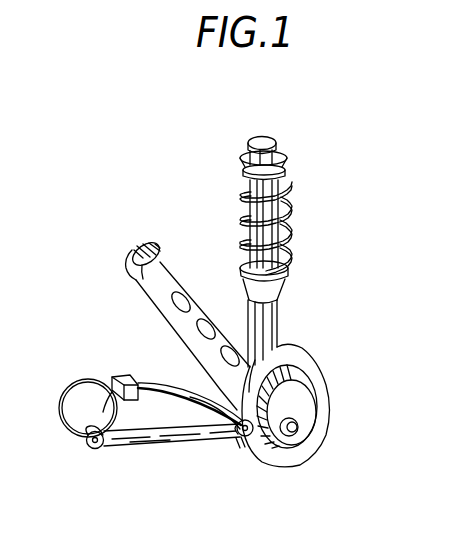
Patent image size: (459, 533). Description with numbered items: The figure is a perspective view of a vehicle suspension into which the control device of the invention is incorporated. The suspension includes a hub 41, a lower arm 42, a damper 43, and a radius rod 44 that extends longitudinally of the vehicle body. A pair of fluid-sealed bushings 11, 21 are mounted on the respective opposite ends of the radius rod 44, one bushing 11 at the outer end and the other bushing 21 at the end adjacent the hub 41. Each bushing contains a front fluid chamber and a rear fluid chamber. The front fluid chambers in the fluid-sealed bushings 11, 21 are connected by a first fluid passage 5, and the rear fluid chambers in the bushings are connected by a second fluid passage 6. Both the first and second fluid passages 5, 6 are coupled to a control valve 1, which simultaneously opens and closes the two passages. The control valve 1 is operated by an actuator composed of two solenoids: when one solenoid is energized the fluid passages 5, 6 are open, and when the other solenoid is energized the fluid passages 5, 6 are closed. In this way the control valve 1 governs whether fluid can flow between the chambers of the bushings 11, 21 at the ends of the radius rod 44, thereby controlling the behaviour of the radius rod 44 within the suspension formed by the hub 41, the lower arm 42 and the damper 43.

The control valve 1 is at (113, 360).
The first fluid passage 5 is at (60, 401).
The second fluid passage 6 is at (195, 388).
The fluid-sealed bushing 11 is at (90, 457).
The fluid-sealed bushing 21 is at (236, 455).
The hub 41 is at (316, 392).
The lower arm 42 is at (163, 283).
The damper 43 is at (268, 231).
The radius rod 44 is at (155, 440).